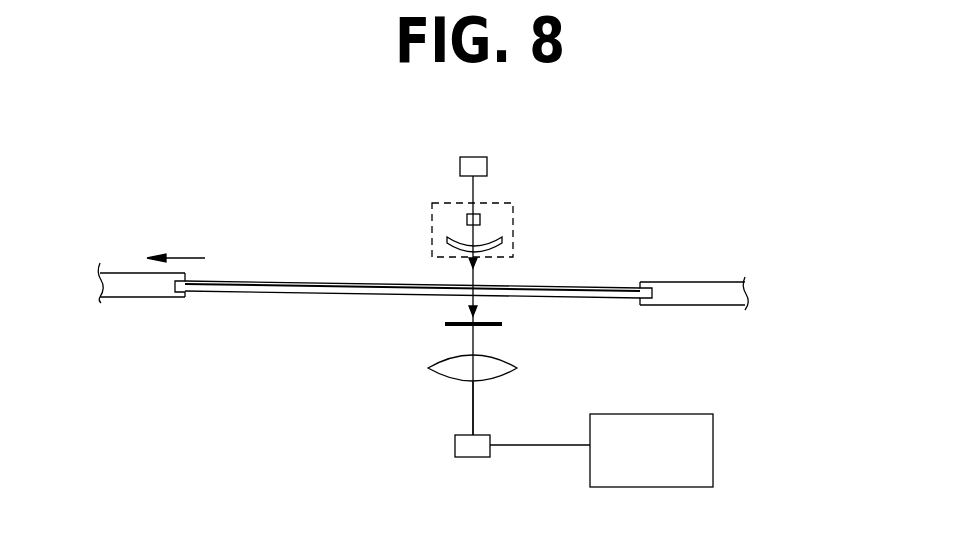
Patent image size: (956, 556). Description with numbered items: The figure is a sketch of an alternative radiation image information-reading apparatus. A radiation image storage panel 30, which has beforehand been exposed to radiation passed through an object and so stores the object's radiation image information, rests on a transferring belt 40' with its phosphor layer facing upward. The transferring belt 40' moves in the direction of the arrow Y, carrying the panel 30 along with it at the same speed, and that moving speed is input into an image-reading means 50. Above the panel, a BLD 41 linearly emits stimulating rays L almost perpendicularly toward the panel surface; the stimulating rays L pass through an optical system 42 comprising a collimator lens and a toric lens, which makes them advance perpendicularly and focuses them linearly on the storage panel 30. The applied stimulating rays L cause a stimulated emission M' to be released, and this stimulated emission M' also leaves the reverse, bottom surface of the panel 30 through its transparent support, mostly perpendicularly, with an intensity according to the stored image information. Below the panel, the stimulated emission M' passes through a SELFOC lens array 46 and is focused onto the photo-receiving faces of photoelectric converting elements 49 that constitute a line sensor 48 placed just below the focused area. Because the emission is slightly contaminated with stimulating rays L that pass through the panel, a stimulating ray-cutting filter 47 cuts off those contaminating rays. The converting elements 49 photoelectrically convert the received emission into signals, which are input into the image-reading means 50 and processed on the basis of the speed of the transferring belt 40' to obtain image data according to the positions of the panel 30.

The radiation image storage panel 30 is at (613, 283).
The transferring belt 40' is at (141, 308).
The BLD 41 is at (487, 163).
The optical system 42 is at (513, 237).
The SELFOC lens array 46 is at (517, 360).
The stimulating ray-cutting filter 47 is at (502, 322).
The line sensor 48 is at (455, 447).
The photoelectric converting elements 49 is at (478, 435).
The image-reading means 50 is at (655, 414).
The stimulating rays L is at (470, 278).
The stimulated emission M' is at (430, 348).
The arrow indicating belt moving direction Y is at (176, 245).